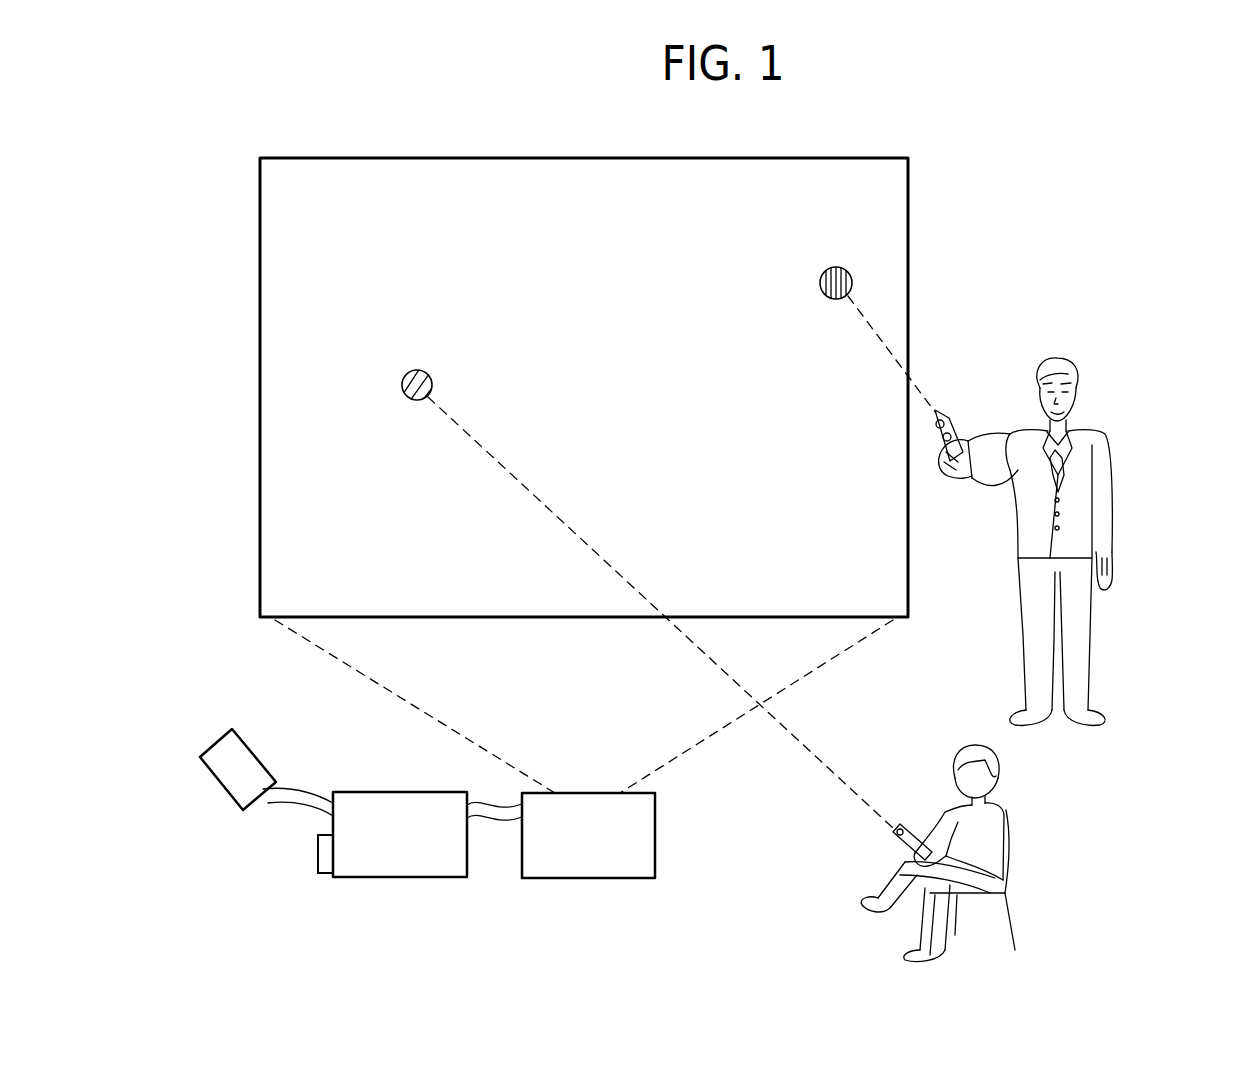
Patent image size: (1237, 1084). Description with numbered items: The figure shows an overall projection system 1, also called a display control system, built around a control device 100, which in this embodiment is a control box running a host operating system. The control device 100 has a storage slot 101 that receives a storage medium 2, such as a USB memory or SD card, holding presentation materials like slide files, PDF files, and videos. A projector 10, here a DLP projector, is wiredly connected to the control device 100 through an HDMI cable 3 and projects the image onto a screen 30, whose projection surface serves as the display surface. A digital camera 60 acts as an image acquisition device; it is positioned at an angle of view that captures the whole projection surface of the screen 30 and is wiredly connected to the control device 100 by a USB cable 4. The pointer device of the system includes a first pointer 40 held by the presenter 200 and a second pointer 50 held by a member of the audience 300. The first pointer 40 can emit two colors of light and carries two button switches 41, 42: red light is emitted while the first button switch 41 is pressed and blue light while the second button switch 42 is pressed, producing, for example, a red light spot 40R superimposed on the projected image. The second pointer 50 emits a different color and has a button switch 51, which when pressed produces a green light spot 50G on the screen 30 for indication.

The projection system 1 is at (1176, 198).
The screen 30 is at (910, 193).
The red light spot 40R is at (830, 268).
The green light spot 50G is at (410, 372).
The first pointer 40 is at (959, 433).
The first button switch 41 is at (927, 440).
The second button switch 42 is at (953, 460).
The presenter 200 is at (1113, 395).
The audience 300 is at (1032, 809).
The second pointer 50 is at (884, 814).
The button switch 51 is at (893, 843).
The digital camera 60 is at (222, 786).
The USB cable 4 is at (278, 812).
The storage medium 2 is at (316, 866).
The storage slot 101 is at (333, 880).
The control device 100 is at (401, 880).
The HDMI cable 3 is at (497, 821).
The projector 10 is at (616, 880).